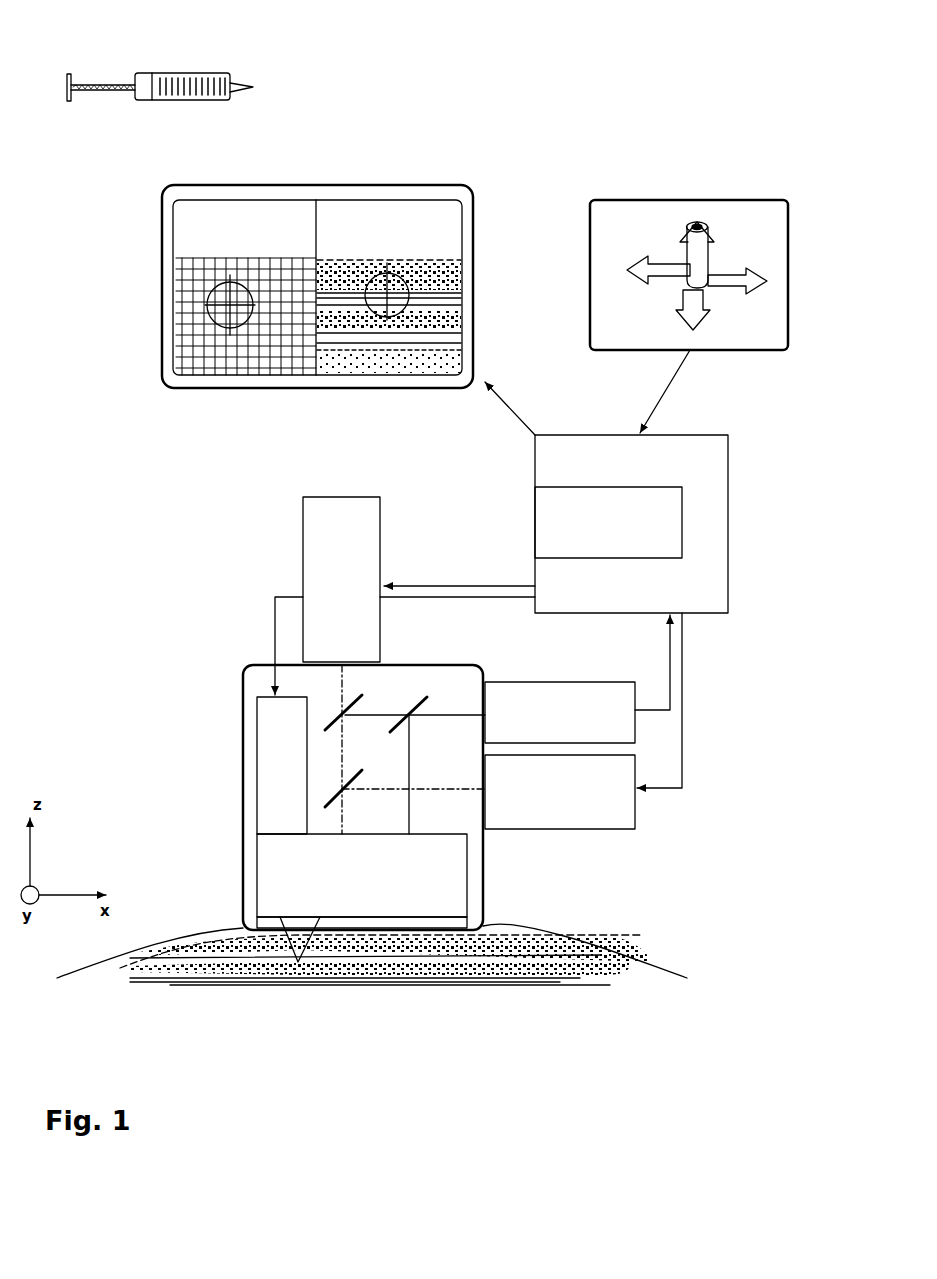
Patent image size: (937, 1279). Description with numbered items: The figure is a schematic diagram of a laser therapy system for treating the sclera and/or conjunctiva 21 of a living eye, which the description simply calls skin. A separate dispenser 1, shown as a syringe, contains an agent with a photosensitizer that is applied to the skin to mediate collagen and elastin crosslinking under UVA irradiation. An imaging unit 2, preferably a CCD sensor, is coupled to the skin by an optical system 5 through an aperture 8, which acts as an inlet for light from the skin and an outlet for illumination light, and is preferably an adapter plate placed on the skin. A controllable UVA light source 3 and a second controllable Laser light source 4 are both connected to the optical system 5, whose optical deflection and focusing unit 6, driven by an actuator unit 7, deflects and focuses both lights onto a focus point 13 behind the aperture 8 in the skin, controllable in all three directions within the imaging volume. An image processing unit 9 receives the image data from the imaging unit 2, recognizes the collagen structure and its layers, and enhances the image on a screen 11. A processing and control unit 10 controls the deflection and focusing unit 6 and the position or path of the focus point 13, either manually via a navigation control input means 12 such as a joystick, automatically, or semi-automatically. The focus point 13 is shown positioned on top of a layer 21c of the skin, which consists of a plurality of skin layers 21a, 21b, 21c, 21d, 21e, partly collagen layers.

The dispenser 1 is at (197, 82).
The imaging unit 2 is at (545, 697).
The UVA light source 3 is at (607, 807).
The Laser light source 4 is at (323, 570).
The optical system 5 is at (373, 767).
The optical deflection and focusing unit 6 is at (268, 880).
The actuator unit 7 is at (268, 800).
The aperture 8 is at (450, 922).
The image processing unit 9 is at (555, 518).
The processing and control unit 10 is at (631, 524).
The screen 11 is at (148, 384).
The navigation control input means 12 is at (757, 335).
The focus point 13 is at (300, 955).
The sclera and/or conjunctiva 21 is at (415, 991).
The skin layer 21a is at (656, 980).
The skin layer 21b is at (632, 990).
The skin layer 21c is at (617, 992).
The skin layer 21d is at (614, 992).
The skin layer 21e is at (580, 993).